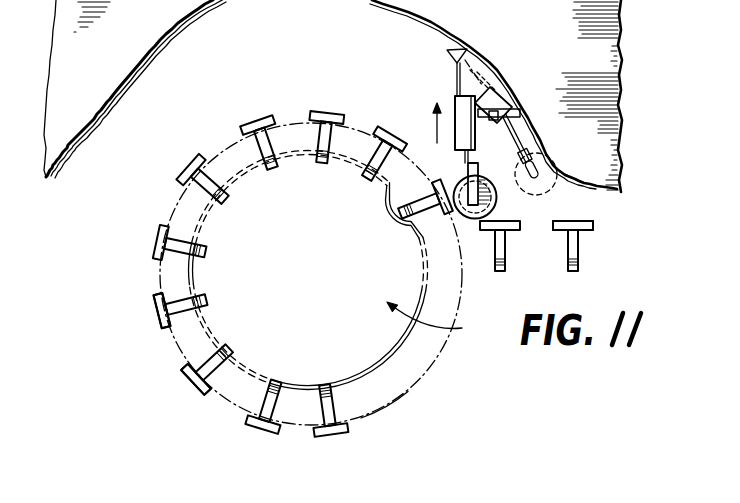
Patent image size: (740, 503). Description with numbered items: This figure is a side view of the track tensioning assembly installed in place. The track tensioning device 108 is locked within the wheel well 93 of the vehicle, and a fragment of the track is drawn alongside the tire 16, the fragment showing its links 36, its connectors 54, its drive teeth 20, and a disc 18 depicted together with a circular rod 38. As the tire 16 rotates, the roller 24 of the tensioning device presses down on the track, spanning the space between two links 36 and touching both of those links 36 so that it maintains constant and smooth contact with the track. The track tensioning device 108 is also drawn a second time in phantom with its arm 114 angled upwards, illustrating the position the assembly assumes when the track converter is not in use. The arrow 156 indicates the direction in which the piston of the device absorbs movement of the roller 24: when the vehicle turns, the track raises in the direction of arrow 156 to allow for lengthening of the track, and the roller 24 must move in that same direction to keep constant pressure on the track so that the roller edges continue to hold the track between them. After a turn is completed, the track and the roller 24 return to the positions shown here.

The wheel well 93 is at (326, 30).
The tire 16 is at (376, 401).
The disc 18 is at (462, 328).
The circular rod 38 is at (403, 349).
The connectors 54 is at (384, 207).
The drive teeth 20 is at (579, 257).
The links 36 is at (593, 222).
The roller 24 is at (483, 195).
The track tensioning device 108 is at (443, 76).
The arm 114 is at (492, 82).
The arrow 156 is at (437, 143).